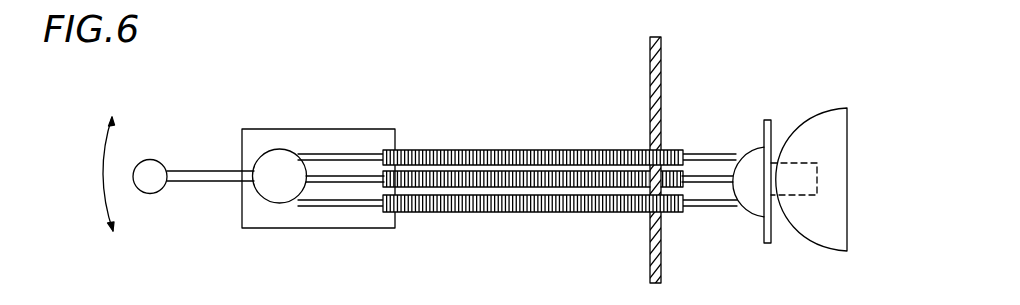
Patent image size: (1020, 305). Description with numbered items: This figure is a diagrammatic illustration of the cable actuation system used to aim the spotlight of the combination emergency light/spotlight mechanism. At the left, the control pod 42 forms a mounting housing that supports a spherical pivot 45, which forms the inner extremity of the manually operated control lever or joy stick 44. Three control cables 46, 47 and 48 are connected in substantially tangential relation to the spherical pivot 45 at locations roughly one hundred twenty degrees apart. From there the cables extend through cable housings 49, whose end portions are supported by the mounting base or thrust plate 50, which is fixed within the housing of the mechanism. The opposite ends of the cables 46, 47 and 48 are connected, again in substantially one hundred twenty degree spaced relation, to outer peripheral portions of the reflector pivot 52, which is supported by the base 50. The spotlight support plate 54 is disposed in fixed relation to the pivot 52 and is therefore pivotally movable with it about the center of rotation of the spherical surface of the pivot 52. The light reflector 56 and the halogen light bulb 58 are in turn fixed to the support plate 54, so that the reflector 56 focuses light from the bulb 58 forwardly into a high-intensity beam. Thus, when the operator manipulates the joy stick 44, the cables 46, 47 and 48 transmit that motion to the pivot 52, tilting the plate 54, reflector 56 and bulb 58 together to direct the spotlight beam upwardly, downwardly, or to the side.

The control pod 42 is at (262, 133).
The control lever (joy stick) 44 is at (199, 170).
The spherical pivot 45 is at (277, 202).
The control cable 46 is at (320, 152).
The control cable 47 is at (352, 176).
The control cable 48 is at (345, 206).
The cable housings 49 is at (540, 150).
The mounting base (thrust plate) 50 is at (650, 60).
The pivot mount (reflector pivot) 52 is at (747, 158).
The spotlight support plate 54 is at (767, 120).
The light reflector 56 is at (847, 229).
The halogen light bulb 58 is at (817, 165).